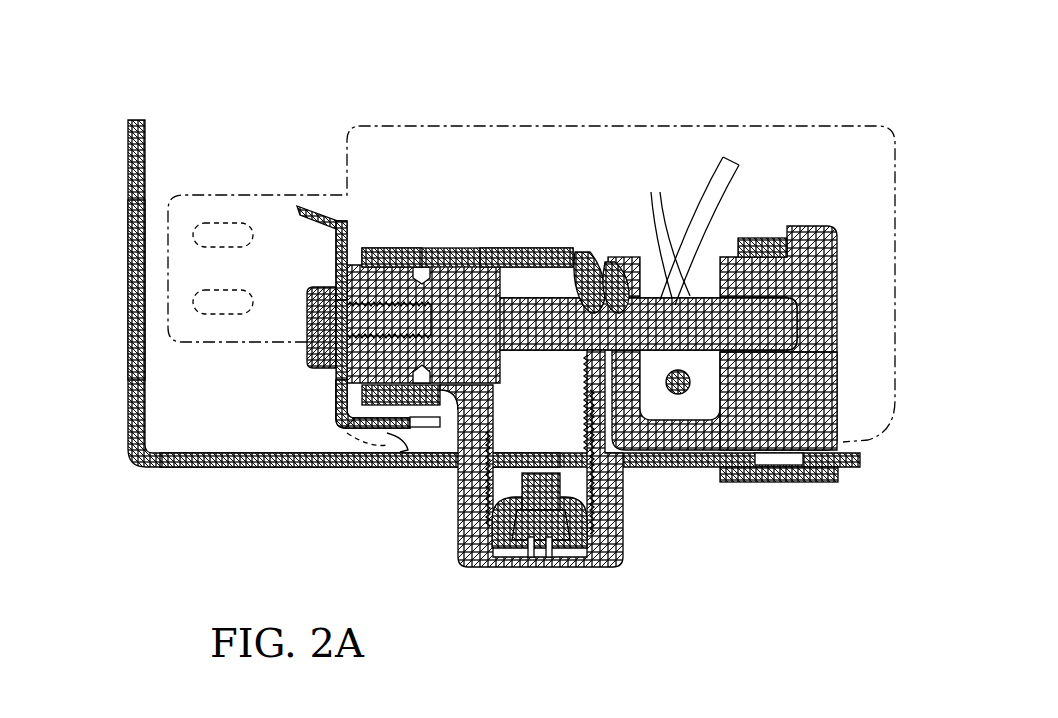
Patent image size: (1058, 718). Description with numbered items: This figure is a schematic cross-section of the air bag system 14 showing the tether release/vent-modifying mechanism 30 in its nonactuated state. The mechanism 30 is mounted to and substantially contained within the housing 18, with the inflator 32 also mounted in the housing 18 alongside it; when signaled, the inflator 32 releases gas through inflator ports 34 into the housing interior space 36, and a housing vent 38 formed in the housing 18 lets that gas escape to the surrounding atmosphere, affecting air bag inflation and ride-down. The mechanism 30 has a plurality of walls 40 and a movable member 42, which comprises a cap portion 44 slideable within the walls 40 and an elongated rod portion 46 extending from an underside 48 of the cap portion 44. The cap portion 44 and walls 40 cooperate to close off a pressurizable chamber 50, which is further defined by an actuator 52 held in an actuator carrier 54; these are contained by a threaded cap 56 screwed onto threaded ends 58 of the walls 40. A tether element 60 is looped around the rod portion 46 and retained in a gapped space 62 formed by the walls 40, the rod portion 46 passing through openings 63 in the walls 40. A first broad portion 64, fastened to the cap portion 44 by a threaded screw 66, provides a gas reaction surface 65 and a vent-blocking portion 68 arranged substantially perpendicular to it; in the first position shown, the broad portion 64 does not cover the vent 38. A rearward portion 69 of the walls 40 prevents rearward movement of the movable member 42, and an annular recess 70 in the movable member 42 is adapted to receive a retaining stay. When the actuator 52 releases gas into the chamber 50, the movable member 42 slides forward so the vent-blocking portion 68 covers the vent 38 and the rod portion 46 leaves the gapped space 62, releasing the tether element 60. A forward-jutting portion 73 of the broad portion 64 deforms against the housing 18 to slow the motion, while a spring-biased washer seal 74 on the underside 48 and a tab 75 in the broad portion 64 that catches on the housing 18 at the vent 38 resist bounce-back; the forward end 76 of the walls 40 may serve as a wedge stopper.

The air bag system 14 is at (276, 110).
The housing 18 is at (128, 298).
The tether release/vent-modifying mechanism 30 is at (524, 242).
The inflator 32 is at (398, 126).
The inflator ports 34 is at (219, 222).
The housing interior space 36 is at (167, 178).
The housing vent 38 is at (288, 470).
The walls 40 is at (418, 252).
The movable member 42 is at (480, 340).
The cap portion 44 is at (455, 250).
The rod portion 46 is at (692, 330).
The underside 48 is at (500, 268).
The pressurizable chamber 50 is at (540, 471).
The actuator 52 is at (525, 548).
The actuator carrier 54 is at (607, 540).
The threaded cap 56 is at (613, 566).
The threaded ends 58 is at (597, 505).
The tether element 60 is at (703, 180).
The gapped space 62 is at (663, 234).
The openings 63 is at (608, 262).
The first broad portion 64 is at (343, 418).
The gas reaction surface 65 is at (337, 395).
The threaded screw 66 is at (307, 352).
The vent-blocking portion 68 is at (423, 430).
The rearward portion 69 is at (778, 282).
The annular recess 70 is at (398, 250).
The forward-jutting portion 73 is at (323, 210).
The spring-biased washer seal 74 is at (452, 402).
The tab 75 is at (400, 443).
The forward end 76 is at (345, 262).